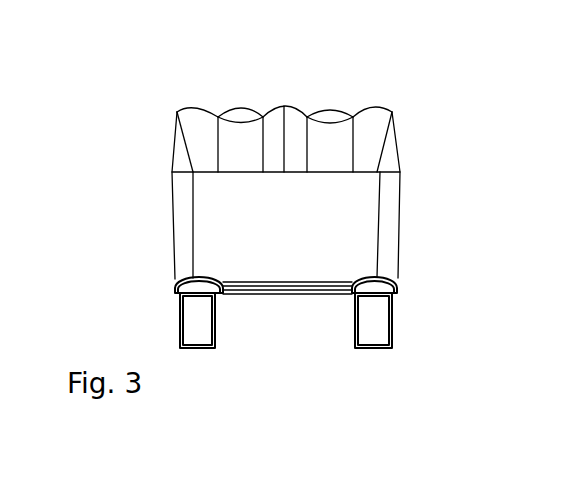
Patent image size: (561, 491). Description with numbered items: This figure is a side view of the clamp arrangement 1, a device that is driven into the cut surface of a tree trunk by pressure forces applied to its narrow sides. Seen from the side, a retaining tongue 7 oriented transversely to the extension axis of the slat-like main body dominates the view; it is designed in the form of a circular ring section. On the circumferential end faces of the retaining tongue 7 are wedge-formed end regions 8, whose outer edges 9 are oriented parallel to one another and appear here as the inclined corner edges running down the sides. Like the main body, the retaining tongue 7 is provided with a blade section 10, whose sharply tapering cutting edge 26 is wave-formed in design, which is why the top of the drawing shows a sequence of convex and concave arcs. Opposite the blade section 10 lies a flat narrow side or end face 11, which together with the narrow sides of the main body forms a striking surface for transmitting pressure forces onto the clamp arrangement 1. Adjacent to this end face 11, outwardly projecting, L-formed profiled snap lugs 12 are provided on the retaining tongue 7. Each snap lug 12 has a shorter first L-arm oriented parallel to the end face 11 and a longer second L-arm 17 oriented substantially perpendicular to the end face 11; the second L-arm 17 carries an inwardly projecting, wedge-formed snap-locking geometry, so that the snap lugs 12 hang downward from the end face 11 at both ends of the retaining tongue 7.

The clamp arrangement 1 is at (428, 123).
The retaining tongue 7 is at (250, 202).
The wedge-formed end region 8 is at (176, 197).
The outer edge 9 is at (173, 245).
The blade section 10 is at (368, 135).
The end face 11 is at (237, 295).
The snap lug 12 is at (165, 318).
The second L-arm 17 is at (199, 312).
The cutting edge 26 is at (323, 108).